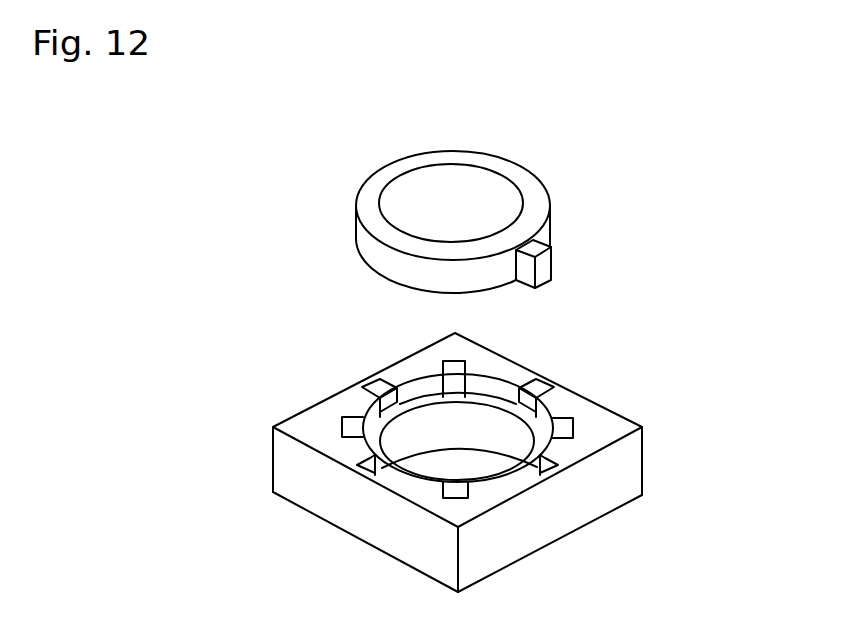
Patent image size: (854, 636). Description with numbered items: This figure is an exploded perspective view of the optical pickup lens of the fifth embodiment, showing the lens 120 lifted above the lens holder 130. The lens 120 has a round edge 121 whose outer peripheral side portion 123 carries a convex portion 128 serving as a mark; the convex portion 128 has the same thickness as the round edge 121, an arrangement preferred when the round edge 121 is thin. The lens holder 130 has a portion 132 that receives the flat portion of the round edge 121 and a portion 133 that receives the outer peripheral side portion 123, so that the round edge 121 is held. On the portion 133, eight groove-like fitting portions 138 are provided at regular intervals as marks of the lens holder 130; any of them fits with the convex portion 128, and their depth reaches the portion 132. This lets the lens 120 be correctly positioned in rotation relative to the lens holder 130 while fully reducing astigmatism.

The lens 120 is at (547, 225).
The round edge 121 is at (537, 187).
The outer peripheral side portion 123 is at (549, 231).
The convex portion 128 is at (545, 284).
The lens holder 130 is at (506, 457).
The portion for receiving the flat portion 132 is at (373, 416).
The portion for receiving the outer peripheral side portion 133 is at (404, 391).
The fitting portions 138 is at (558, 371).